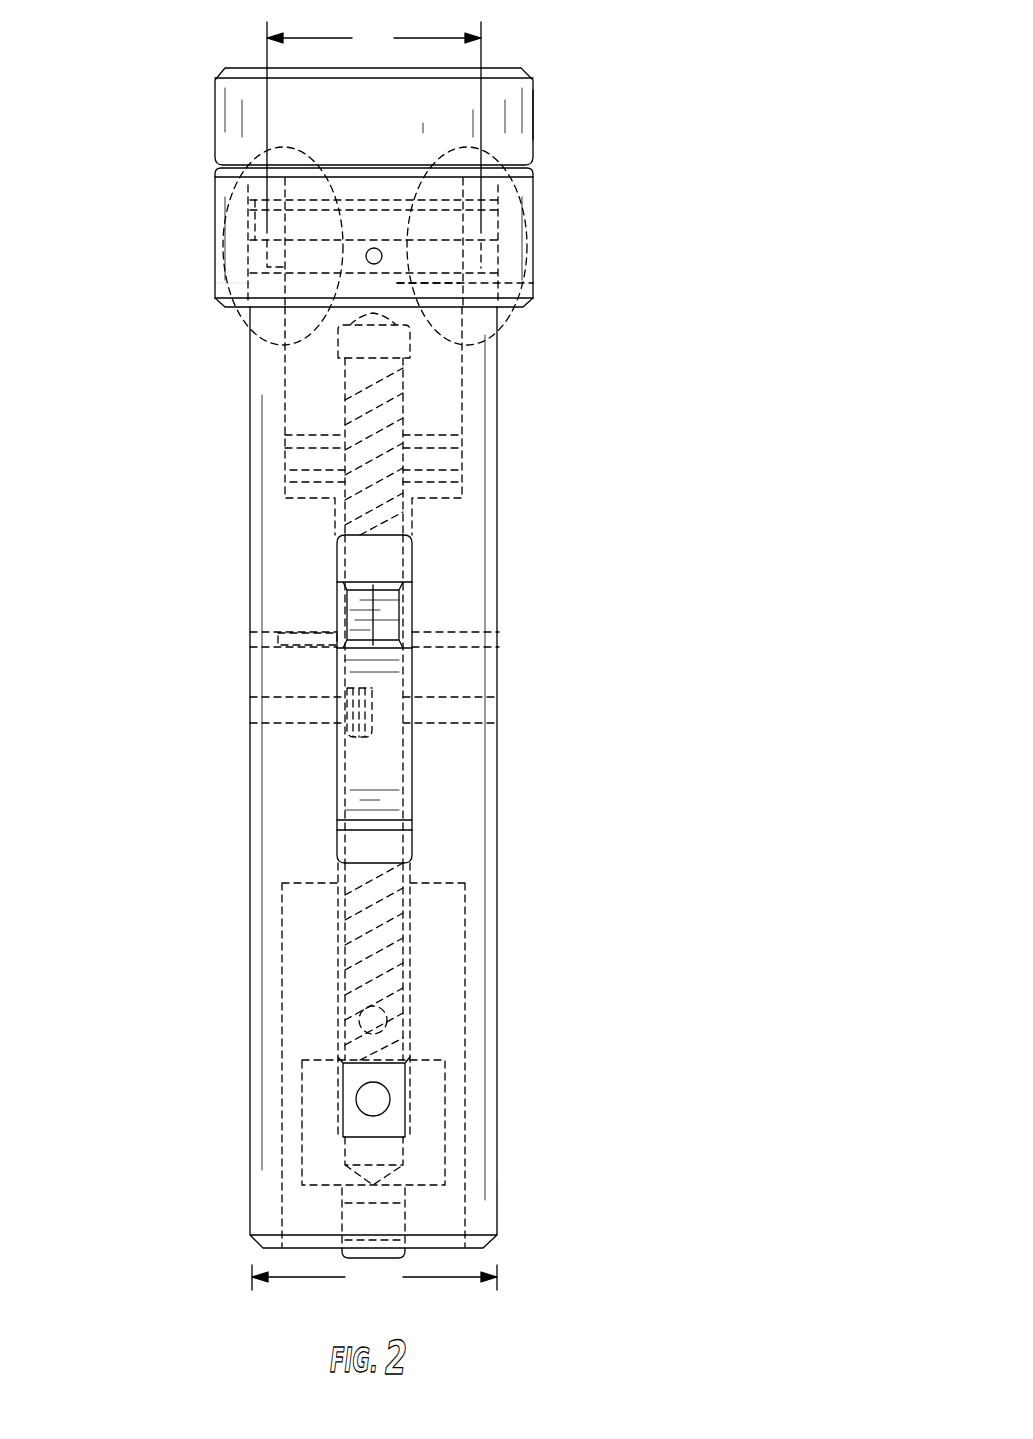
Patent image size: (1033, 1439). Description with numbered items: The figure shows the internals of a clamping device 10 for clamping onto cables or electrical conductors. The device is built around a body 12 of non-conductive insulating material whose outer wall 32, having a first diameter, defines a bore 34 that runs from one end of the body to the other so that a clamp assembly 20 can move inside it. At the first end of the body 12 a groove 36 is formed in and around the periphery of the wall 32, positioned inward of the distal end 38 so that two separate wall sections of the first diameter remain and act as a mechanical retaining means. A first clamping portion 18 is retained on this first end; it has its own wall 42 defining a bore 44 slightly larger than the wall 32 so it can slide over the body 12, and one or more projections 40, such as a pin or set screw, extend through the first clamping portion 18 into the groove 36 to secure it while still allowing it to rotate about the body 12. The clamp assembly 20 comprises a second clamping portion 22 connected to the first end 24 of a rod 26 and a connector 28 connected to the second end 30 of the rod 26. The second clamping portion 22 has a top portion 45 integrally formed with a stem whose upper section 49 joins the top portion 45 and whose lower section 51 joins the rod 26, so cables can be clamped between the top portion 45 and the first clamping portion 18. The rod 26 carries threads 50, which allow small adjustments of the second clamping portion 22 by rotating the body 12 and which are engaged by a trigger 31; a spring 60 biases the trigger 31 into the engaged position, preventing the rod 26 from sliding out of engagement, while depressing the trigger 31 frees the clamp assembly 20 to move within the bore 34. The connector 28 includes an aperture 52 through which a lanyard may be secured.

The clamping device 10 is at (725, 53).
The body 12 is at (515, 755).
The first clamping portion 18 is at (535, 227).
The clamp assembly 20 is at (205, 55).
The second clamping portion 22 is at (374, 116).
The first end of the rod 24 is at (417, 349).
The rod 26 is at (380, 928).
The connector 28 is at (418, 1143).
The second end of the rod 30 is at (420, 1072).
The trigger 31 is at (393, 630).
The outer wall 32 is at (482, 1215).
The bore 34 is at (287, 318).
The groove 36 is at (502, 256).
The distal end 38 is at (495, 205).
The projection 40 is at (366, 256).
The wall 42 is at (235, 283).
The bore 44 is at (268, 152).
The top portion 45 is at (528, 110).
The upper section 49 is at (400, 290).
The threads 50 is at (380, 426).
The lower section 51 is at (437, 388).
The aperture 52 is at (360, 1203).
The spring 60 is at (337, 708).